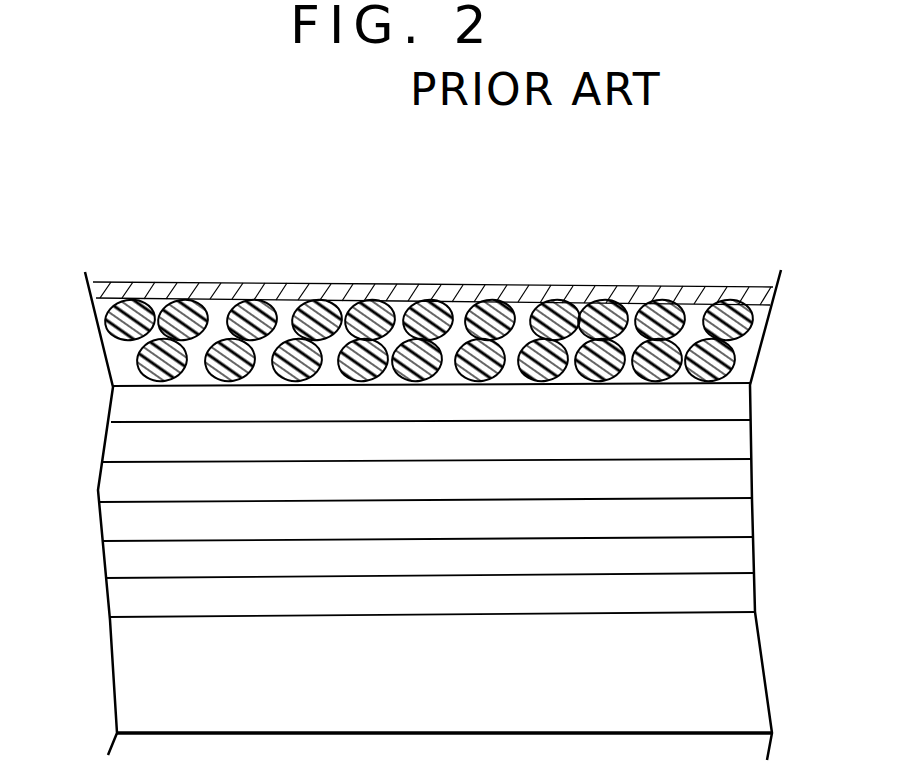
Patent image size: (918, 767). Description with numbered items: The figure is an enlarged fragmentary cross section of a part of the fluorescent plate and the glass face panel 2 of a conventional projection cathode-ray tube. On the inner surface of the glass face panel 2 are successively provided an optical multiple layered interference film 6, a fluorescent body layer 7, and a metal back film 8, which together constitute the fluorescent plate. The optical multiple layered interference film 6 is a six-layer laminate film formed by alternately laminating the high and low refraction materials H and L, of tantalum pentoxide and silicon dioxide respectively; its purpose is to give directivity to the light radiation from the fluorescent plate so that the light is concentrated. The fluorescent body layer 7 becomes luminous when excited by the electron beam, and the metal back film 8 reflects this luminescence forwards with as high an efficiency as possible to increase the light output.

The glass face panel 2 is at (753, 679).
The optical multiple layered interference film 6 is at (80, 615).
The fluorescent body layer 7 is at (776, 307).
The metal back film 8 is at (590, 297).
The low refraction material L is at (733, 405).
The high refraction material H is at (733, 445).